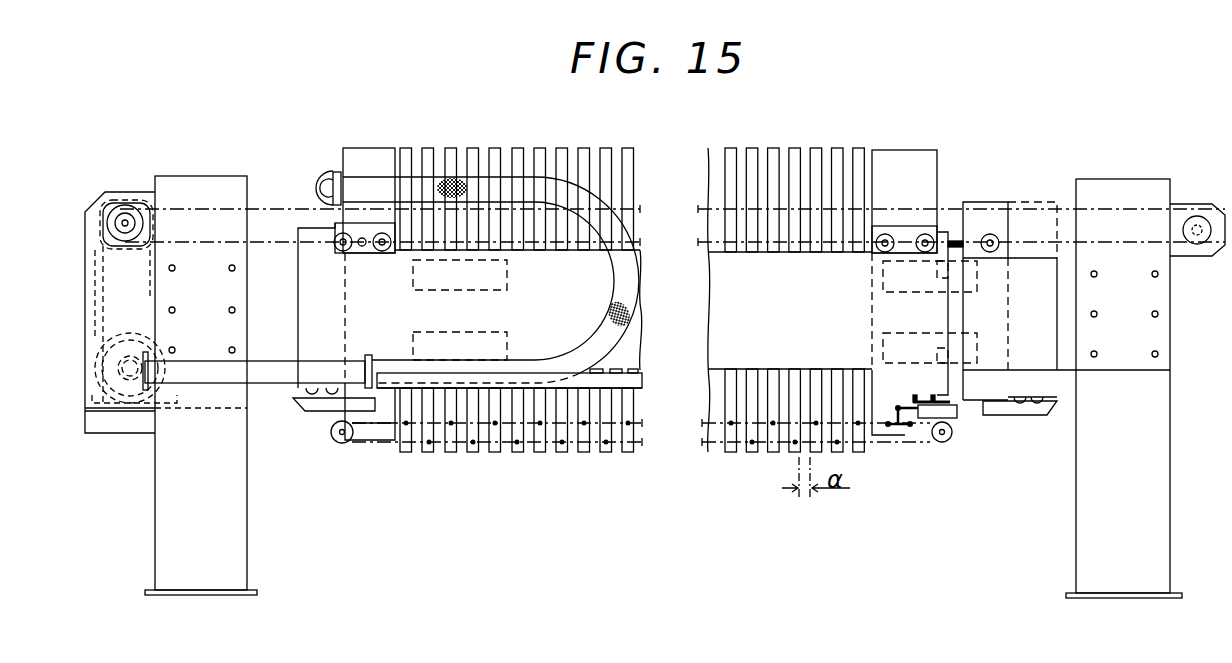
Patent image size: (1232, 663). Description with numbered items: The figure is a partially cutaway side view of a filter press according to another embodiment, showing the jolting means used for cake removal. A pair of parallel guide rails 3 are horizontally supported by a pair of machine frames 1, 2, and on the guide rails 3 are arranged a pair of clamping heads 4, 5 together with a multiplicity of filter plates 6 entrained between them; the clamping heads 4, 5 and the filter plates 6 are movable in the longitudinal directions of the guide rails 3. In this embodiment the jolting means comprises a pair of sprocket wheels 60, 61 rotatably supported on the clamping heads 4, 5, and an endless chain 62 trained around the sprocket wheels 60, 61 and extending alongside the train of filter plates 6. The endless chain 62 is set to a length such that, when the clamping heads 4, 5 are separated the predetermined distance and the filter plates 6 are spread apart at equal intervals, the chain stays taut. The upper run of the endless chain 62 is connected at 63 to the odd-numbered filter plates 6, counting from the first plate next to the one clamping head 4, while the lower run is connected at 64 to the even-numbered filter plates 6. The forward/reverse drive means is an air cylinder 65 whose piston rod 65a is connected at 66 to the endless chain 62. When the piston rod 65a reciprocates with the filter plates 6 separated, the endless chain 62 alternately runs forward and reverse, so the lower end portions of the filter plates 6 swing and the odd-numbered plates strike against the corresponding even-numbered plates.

The machine frame 1 is at (172, 515).
The machine frame 2 is at (1141, 519).
The guide rail 3 is at (732, 328).
The clamping head 4 is at (372, 415).
The clamping head 5 is at (880, 425).
The filter plate 6 is at (627, 447).
The sprocket wheel 60 is at (340, 443).
The sprocket wheel 61 is at (943, 437).
The endless chain 62 is at (386, 442).
The connection to odd-numbered filter plates 63 is at (453, 424).
The connection to even-numbered filter plates 64 is at (475, 441).
The air cylinder 65 is at (957, 415).
The piston rod 65a is at (913, 413).
The connection of piston rod to chain 66 is at (892, 388).